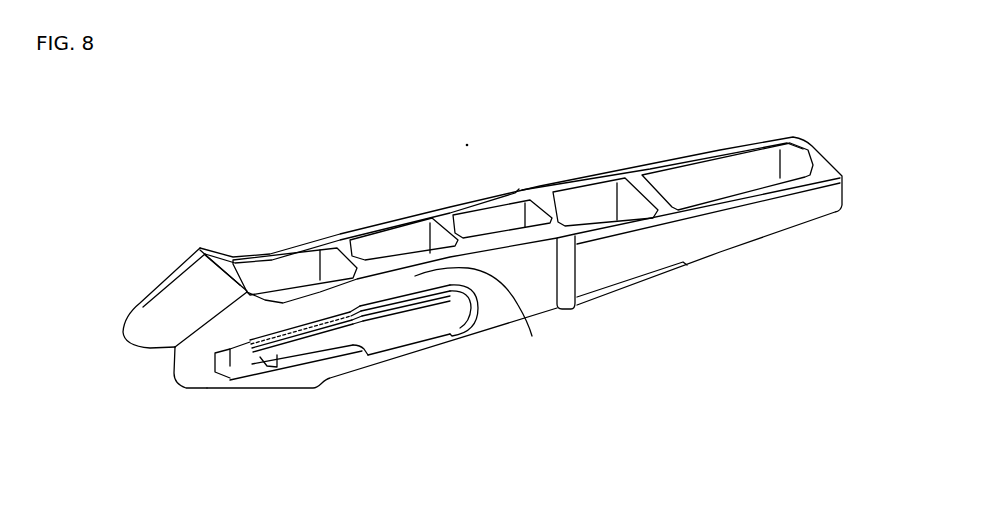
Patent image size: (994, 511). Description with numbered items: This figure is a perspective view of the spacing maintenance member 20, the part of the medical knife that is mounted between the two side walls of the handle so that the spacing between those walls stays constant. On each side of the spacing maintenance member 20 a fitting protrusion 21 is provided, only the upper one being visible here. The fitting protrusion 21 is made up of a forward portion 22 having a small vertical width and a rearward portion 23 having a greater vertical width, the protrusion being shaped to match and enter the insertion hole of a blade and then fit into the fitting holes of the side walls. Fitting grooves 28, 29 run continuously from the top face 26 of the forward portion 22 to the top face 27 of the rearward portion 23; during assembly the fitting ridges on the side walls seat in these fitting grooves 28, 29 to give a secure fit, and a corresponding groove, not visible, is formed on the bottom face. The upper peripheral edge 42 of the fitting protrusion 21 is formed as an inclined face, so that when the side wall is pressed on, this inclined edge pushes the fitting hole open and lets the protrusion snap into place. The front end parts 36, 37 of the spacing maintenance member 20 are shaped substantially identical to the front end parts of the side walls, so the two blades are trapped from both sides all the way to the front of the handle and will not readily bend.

The spacing maintenance member 20 is at (503, 194).
The fitting protrusion 21 is at (373, 352).
The forward portion 22 is at (323, 359).
The rearward portion 23 is at (413, 333).
The top face of the forward portion 26 is at (307, 325).
The top face of the rearward portion 27 is at (390, 306).
The fitting groove 28 is at (292, 343).
The fitting groove 29 is at (460, 272).
The front end part of the spacing maintenance member 36 is at (162, 297).
The front end part of the spacing maintenance member 37 is at (187, 358).
The upper peripheral edge 42 is at (447, 304).